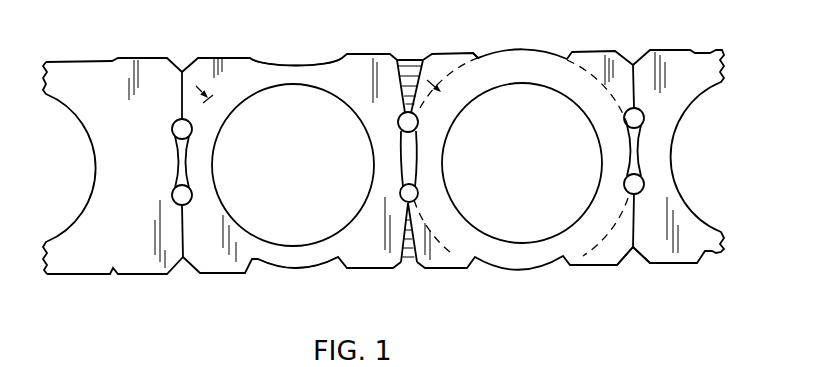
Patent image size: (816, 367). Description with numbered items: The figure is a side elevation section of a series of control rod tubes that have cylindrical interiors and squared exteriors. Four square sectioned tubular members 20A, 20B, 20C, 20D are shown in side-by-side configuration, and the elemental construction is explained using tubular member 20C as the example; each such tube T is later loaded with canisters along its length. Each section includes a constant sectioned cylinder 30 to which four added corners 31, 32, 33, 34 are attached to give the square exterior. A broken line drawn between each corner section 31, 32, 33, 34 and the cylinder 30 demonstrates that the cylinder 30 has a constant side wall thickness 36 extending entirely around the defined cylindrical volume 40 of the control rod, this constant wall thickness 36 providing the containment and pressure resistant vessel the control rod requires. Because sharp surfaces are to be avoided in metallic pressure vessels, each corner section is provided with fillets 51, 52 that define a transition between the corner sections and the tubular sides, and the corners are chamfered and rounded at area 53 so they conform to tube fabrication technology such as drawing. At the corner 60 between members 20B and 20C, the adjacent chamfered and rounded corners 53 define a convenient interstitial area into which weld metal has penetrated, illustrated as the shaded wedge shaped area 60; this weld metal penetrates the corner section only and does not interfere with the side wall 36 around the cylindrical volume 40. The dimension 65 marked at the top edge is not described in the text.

The square sectioned tubular member 20A is at (128, 59).
The square sectioned tubular member 20B is at (346, 55).
The square sectioned tubular member 20C is at (577, 52).
The square sectioned tubular member 20D is at (710, 50).
The constant sectioned cylinder 30 is at (526, 62).
The corner 31 is at (200, 58).
The corner 32 is at (225, 262).
The corner 33 is at (383, 259).
The corner 34 is at (360, 83).
The side wall thickness 36 is at (219, 113).
The cylindrical volume 40 is at (571, 157).
The fillet 51 is at (481, 58).
The fillet 52 is at (400, 122).
The chamfered and rounded corner area 53 is at (630, 265).
The weld metal area 60 is at (407, 64).
The edge depression 65 is at (306, 52).
The tube T is at (304, 277).